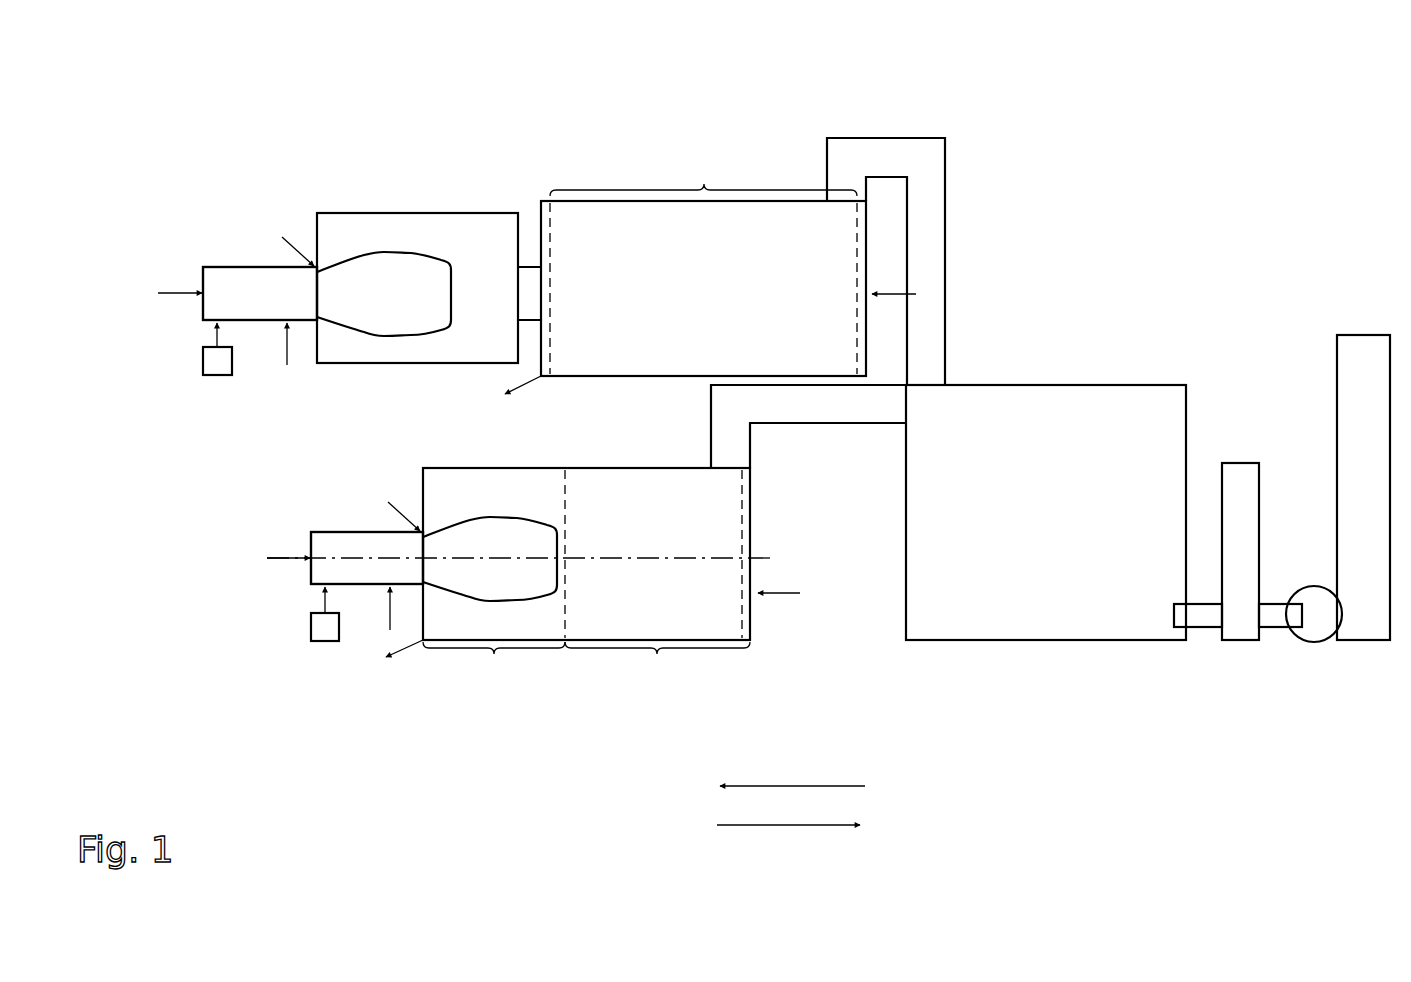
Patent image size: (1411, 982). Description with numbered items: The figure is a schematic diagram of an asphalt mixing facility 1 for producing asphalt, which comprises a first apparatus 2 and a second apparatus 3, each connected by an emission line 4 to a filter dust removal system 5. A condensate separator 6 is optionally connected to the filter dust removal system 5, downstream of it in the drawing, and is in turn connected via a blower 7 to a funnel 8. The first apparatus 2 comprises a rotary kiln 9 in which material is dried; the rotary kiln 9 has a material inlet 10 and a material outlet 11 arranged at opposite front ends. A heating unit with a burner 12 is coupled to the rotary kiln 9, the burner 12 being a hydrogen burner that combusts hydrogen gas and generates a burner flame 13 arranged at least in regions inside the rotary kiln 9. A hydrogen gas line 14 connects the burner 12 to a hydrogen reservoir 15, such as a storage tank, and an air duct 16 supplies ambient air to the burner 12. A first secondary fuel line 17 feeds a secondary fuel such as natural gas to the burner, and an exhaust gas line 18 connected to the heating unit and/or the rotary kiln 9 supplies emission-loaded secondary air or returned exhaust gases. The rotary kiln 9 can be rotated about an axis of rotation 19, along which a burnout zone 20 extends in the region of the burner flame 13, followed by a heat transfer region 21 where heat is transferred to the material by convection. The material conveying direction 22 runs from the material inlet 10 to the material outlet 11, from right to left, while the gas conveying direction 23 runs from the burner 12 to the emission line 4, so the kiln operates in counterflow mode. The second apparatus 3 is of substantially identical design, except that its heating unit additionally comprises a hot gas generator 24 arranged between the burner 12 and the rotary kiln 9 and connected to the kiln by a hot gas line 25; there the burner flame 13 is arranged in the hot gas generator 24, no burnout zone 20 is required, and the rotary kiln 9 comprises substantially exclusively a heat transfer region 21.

The asphalt mixing facility 1 is at (993, 122).
The first apparatus 2 is at (277, 528).
The second apparatus 3 is at (168, 267).
The emission line 4 is at (898, 149).
The filter dust removal system 5 is at (1063, 397).
The condensate separator 6 is at (1238, 473).
The blower 7 is at (1313, 593).
The funnel 8 is at (1373, 343).
The rotary kiln 9 is at (636, 365).
The material inlet 10 is at (893, 292).
The material outlet 11 is at (537, 374).
The burner 12 is at (268, 270).
The burner flame 13 is at (378, 257).
The hydrogen gas line 14 is at (212, 340).
The hydrogen reservoir 15 is at (215, 368).
The air duct 16 is at (177, 292).
The first secondary fuel line 17 is at (289, 345).
The exhaust gas line 18 is at (296, 243).
The axis of rotation 19 is at (735, 560).
The burnout zone 20 is at (494, 669).
The heat transfer region 21 is at (704, 184).
The material conveying direction 22 is at (815, 786).
The gas conveying direction 23 is at (813, 825).
The hot gas generator 24 is at (425, 222).
The hot gas line 25 is at (532, 277).